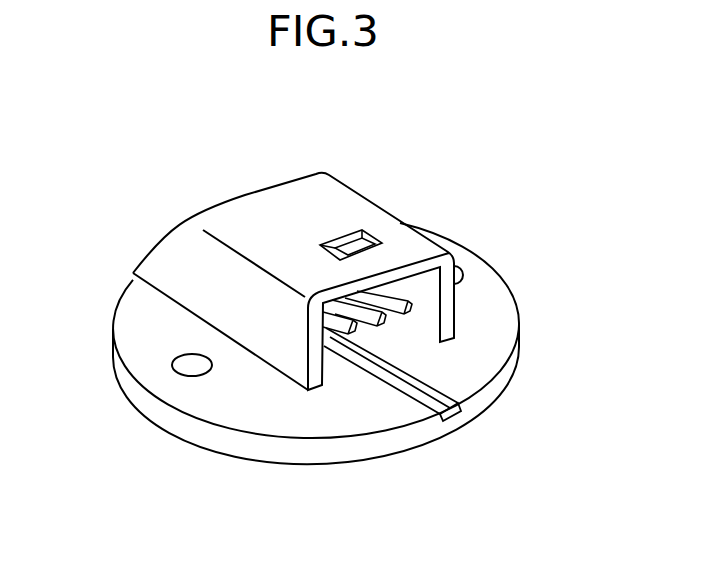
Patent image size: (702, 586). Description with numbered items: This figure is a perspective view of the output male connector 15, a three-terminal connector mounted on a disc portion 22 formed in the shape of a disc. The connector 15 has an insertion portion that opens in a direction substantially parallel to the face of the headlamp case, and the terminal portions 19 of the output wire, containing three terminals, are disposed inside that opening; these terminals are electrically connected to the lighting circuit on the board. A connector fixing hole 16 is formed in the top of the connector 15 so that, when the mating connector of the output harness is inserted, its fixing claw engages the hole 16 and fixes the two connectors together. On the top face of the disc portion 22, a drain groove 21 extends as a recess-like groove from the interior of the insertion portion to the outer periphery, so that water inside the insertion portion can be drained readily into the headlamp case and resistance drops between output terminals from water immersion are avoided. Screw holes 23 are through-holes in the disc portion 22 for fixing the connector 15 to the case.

The output male connector 15 is at (245, 195).
The connector fixing hole 16 is at (353, 240).
The terminal portions 19 is at (412, 314).
The drain groove 21 is at (380, 368).
The disc portion 22 is at (253, 410).
The screw holes 23 is at (170, 367).